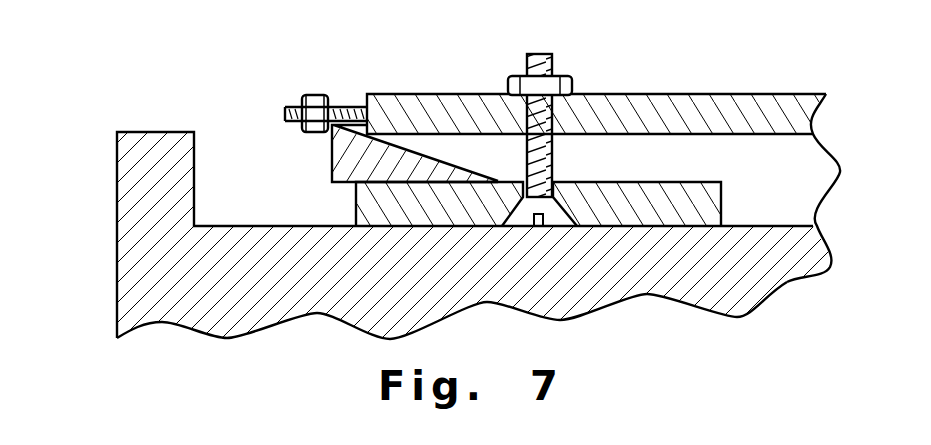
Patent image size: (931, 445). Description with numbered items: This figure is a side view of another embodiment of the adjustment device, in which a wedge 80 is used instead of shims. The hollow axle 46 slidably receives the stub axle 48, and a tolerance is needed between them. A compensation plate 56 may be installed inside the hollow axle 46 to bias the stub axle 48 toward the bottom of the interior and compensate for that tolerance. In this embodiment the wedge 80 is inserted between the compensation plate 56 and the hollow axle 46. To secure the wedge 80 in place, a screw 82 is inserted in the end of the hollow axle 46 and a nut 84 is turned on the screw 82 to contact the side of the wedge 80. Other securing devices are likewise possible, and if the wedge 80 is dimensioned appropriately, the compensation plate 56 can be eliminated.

The hollow axle 46 is at (680, 103).
The stub axle 48 is at (120, 153).
The compensation plate 56 is at (717, 200).
The wedge 80 is at (337, 150).
The screw 82 is at (348, 106).
The nut 84 is at (318, 97).